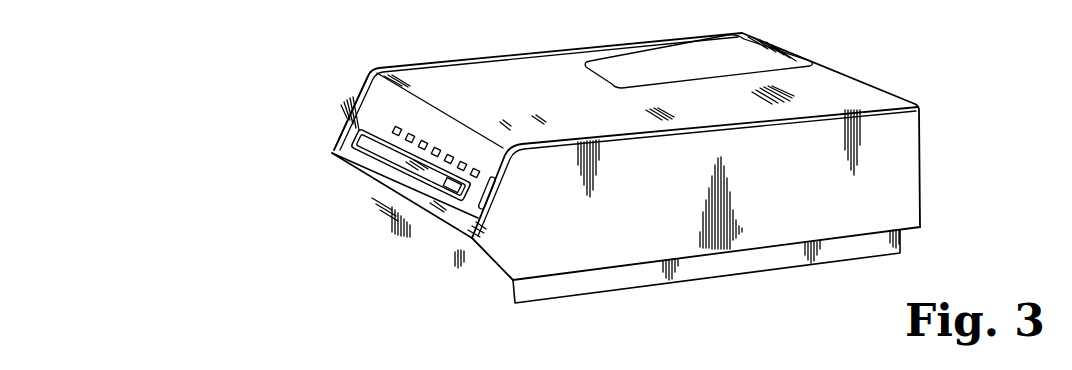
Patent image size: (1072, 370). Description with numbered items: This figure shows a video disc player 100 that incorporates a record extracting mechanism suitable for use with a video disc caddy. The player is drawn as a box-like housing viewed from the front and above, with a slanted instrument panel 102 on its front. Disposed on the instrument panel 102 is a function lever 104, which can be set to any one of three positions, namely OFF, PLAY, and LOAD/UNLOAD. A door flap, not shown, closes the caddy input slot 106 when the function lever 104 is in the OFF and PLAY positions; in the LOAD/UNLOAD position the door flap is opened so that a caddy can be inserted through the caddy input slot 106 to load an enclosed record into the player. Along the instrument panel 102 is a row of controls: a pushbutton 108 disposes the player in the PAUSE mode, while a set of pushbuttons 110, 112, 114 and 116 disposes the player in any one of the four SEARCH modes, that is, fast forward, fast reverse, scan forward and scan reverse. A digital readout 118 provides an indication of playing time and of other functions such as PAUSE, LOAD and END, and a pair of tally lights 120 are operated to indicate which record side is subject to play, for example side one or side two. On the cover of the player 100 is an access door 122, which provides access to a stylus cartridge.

The video disc player 100 is at (198, 109).
The instrument panel 102 is at (362, 93).
The function lever 104 is at (474, 197).
The caddy input slot 106 is at (370, 150).
The pushbutton 108 is at (481, 172).
The pushbutton 110 is at (455, 195).
The pushbutton 112 is at (453, 155).
The pushbutton 114 is at (440, 148).
The pushbutton 116 is at (426, 141).
The digital readout 118 is at (413, 134).
The tally lights 120 is at (400, 127).
The access door 122 is at (773, 58).